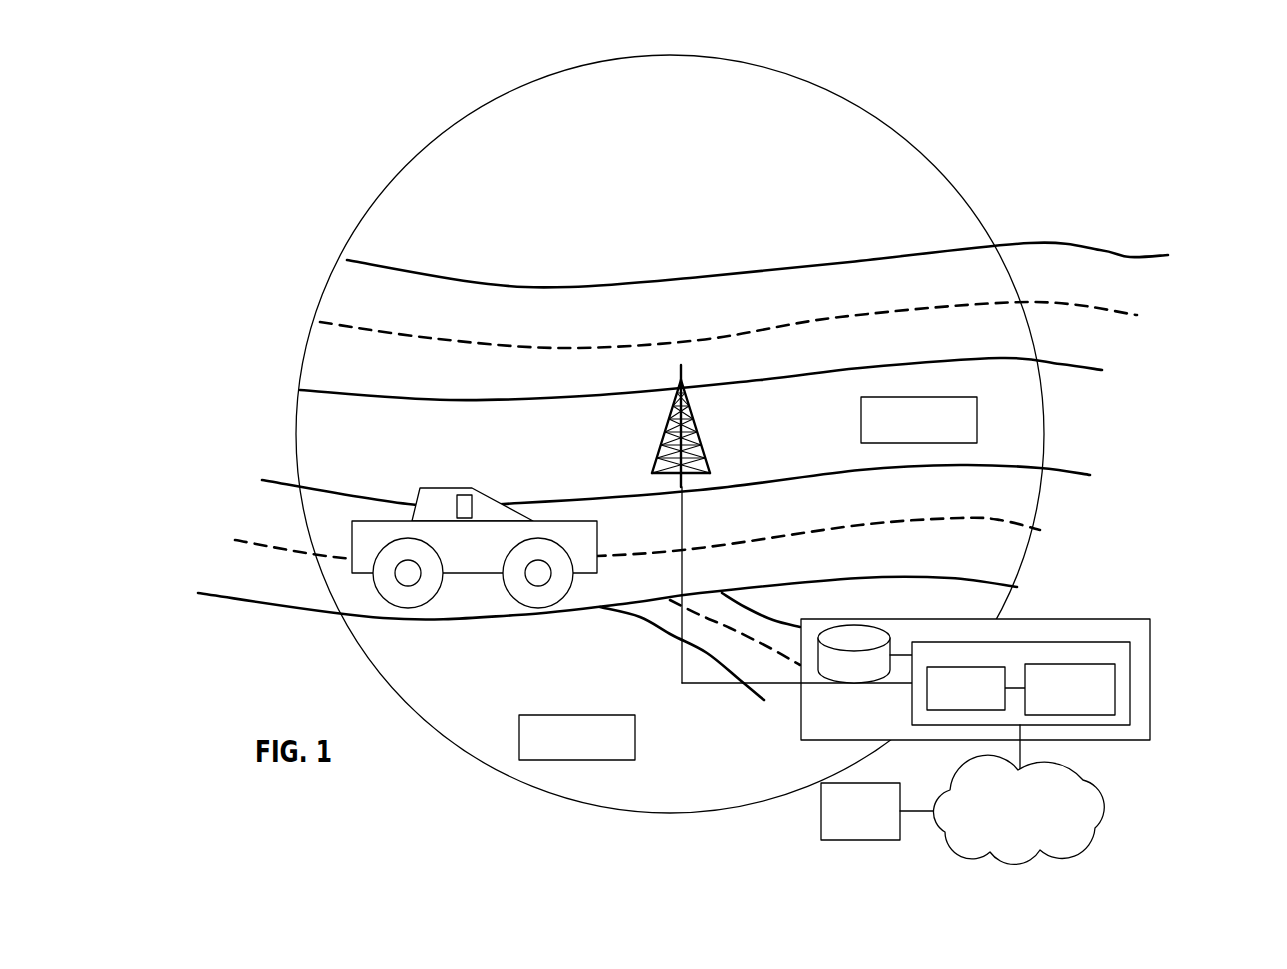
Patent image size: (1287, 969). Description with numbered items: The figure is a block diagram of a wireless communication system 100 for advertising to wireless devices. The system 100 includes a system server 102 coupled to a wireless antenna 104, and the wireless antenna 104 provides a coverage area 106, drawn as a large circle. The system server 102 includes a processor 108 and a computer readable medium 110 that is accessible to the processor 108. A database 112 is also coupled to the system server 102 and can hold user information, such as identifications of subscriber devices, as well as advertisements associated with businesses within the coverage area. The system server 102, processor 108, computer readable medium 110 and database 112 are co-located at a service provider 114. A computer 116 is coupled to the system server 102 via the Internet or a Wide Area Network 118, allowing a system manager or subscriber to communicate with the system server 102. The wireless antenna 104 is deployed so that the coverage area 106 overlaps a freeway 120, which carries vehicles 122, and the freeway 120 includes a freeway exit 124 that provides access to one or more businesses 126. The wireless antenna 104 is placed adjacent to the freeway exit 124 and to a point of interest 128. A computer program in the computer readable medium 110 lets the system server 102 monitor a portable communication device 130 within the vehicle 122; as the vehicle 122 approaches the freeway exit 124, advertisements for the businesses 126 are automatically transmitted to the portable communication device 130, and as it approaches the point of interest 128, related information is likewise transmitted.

The system 100 is at (1000, 197).
The system server 102 is at (1016, 716).
The wireless antenna 104 is at (734, 524).
The coverage area 106 is at (670, 434).
The processor 108 is at (884, 721).
The computer readable medium 110 is at (1142, 727).
The database 112 is at (776, 686).
The service provider 114 is at (966, 686).
The computer 116 is at (815, 821).
The Internet or Wide Area Network 118 is at (1080, 801).
The freeway 120 is at (660, 443).
The vehicle 122 is at (459, 533).
The freeway exit 124 is at (670, 646).
The business 126 is at (541, 718).
The point of interest 128 is at (986, 413).
The portable communication device 130 is at (529, 488).